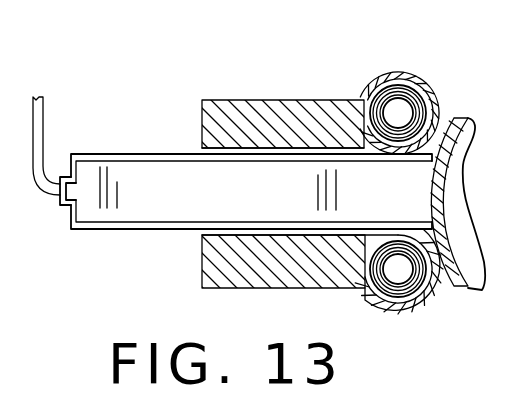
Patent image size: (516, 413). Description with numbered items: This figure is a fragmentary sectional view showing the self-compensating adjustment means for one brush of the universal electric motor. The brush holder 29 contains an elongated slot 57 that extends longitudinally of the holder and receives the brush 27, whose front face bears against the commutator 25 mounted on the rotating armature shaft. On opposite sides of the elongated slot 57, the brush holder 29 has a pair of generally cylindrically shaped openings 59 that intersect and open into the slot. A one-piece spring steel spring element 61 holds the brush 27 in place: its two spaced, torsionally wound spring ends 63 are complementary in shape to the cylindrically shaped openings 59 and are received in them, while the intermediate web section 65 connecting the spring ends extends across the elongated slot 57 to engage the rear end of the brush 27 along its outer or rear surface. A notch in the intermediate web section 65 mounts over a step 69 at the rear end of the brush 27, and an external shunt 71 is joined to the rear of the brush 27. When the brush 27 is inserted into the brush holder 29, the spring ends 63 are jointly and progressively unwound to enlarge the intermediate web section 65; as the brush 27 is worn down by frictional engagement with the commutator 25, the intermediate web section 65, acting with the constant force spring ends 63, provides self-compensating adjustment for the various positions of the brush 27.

The commutator 25 is at (455, 146).
The brush 27 is at (156, 187).
The brush holder 29 is at (256, 127).
The elongated slot 57 is at (222, 149).
The cylindrically shaped opening 59 is at (396, 97).
The spring element 61 is at (297, 153).
The torsionally wound spring end 63 is at (407, 108).
The intermediate web section 65 is at (113, 226).
The step 69 is at (63, 200).
The external shunt 71 is at (43, 108).